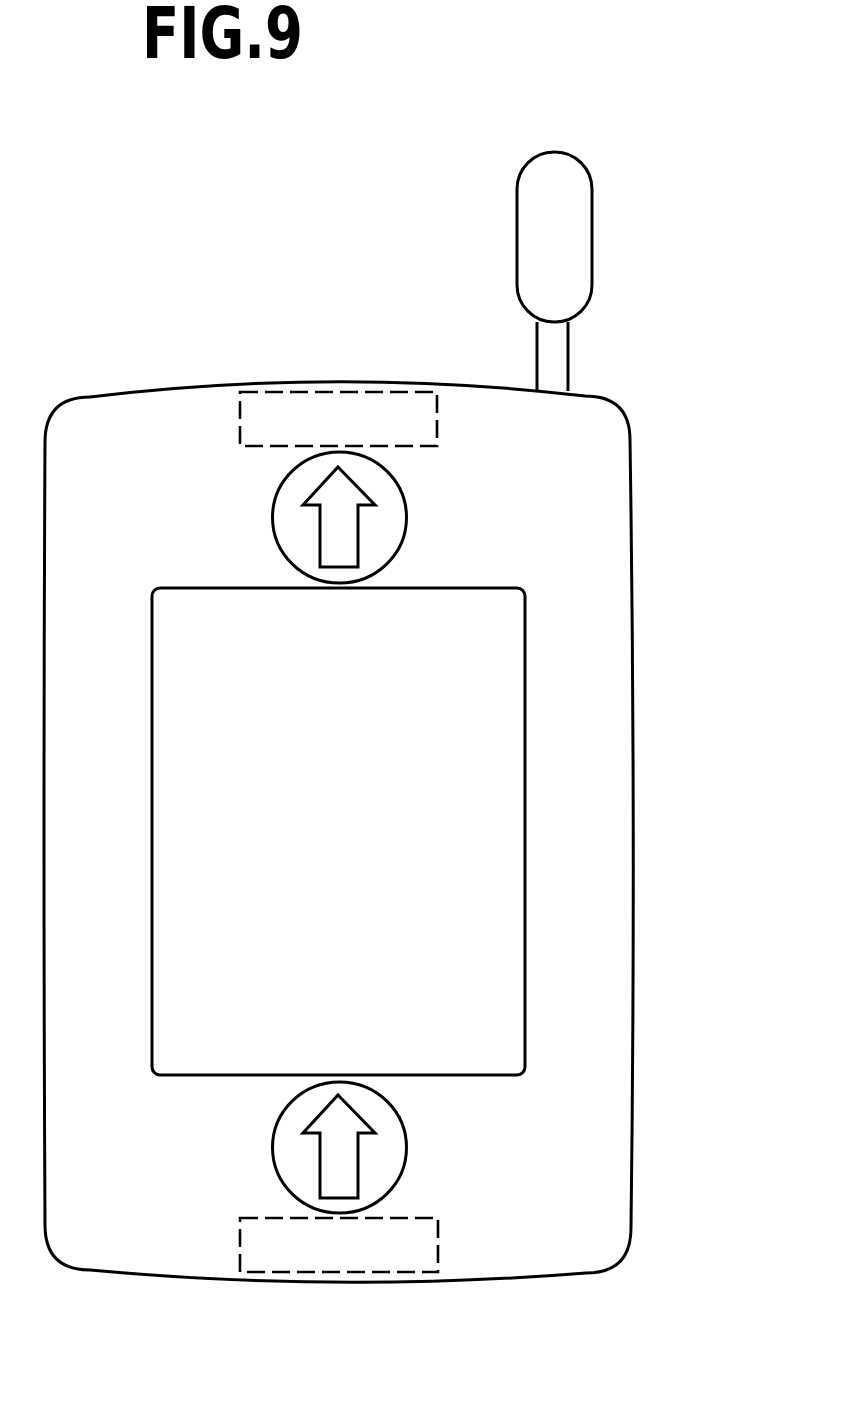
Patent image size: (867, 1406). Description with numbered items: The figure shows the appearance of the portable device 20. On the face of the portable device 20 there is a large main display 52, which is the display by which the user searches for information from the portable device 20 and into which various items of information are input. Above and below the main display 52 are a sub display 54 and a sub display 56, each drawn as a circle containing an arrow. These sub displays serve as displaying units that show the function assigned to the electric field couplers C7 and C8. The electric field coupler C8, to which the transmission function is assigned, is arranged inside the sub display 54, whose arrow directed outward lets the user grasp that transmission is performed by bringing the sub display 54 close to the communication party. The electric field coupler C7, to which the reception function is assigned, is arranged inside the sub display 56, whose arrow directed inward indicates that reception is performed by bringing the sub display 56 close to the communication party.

The portable device 20 is at (632, 824).
The main display 52 is at (525, 703).
The sub display 54 is at (406, 518).
The sub display 56 is at (407, 1148).
The electric field coupler C7 is at (438, 1242).
The electric field coupler C8 is at (437, 412).